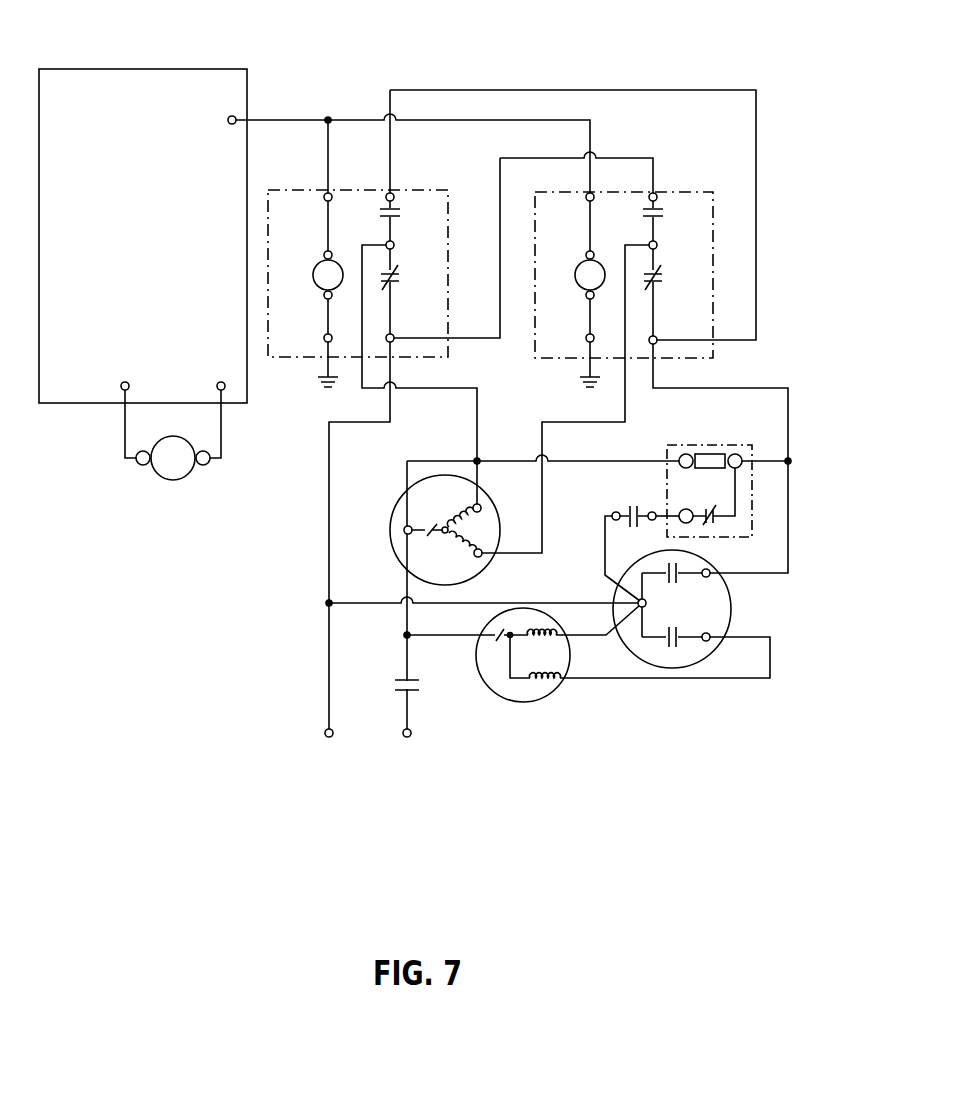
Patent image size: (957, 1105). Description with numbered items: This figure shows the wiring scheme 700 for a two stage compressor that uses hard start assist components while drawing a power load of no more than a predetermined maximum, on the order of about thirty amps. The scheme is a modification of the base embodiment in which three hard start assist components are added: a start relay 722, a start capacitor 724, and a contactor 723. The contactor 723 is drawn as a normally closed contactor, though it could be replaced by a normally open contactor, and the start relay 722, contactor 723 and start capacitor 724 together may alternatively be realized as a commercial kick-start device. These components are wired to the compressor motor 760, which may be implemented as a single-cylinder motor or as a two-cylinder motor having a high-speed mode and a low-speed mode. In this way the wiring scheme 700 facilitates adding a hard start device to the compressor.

The control circuit wiring diagram 700 is at (453, 475).
The start relay 722 is at (723, 491).
The contactor 723 is at (716, 528).
The start capacitor 724 is at (624, 507).
The motor 760 is at (400, 504).